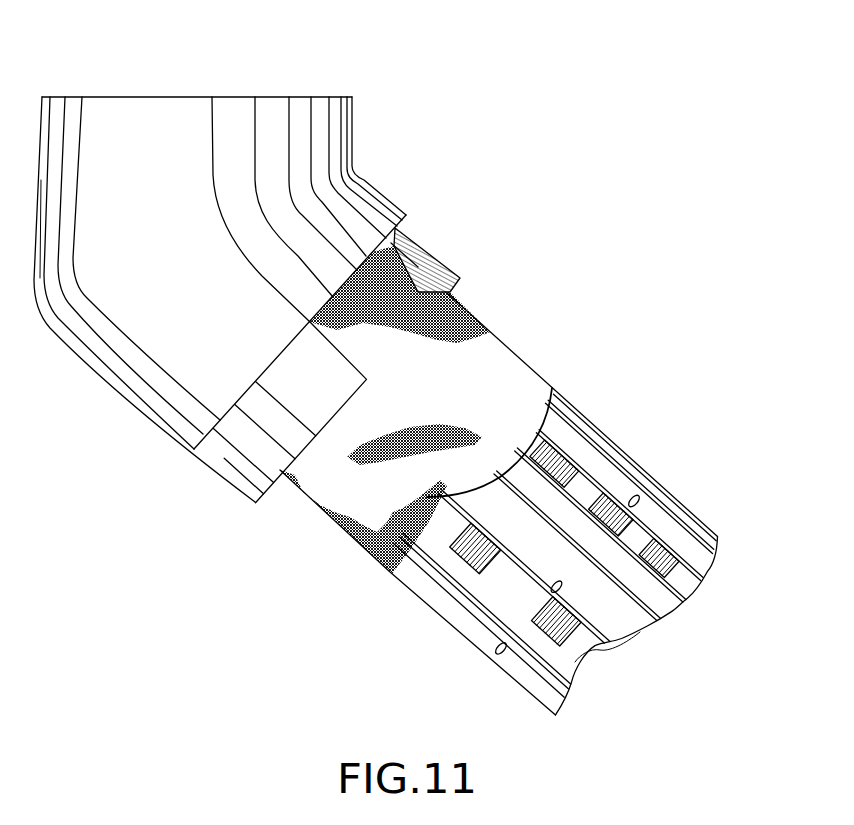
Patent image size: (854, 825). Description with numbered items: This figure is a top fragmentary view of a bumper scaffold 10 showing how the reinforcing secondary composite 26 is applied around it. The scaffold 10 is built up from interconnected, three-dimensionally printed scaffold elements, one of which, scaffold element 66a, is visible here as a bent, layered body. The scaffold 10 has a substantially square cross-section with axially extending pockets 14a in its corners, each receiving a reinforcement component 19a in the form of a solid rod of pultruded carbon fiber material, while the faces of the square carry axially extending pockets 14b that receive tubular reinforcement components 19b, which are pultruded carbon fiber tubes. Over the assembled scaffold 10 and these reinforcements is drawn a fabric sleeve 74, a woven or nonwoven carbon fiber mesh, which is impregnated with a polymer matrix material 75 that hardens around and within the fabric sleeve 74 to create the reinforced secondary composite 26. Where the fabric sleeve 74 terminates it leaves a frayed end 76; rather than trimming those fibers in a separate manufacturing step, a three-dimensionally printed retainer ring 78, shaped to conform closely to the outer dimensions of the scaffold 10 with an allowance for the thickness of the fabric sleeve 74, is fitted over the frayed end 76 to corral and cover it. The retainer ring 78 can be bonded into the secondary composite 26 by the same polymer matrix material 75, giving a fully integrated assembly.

The scaffold 10 is at (557, 167).
The scaffold element 66a is at (258, 122).
The frayed end 76 is at (364, 259).
The retainer ring 78 is at (229, 463).
The polymer matrix material 75 is at (437, 400).
The secondary composite 26 is at (497, 367).
The fabric sleeve 74 is at (527, 403).
The axially extending pocket 14a is at (700, 538).
The axially extending pocket 14b is at (622, 624).
The reinforcement component 19a is at (610, 470).
The tubular reinforcement component 19b is at (556, 560).